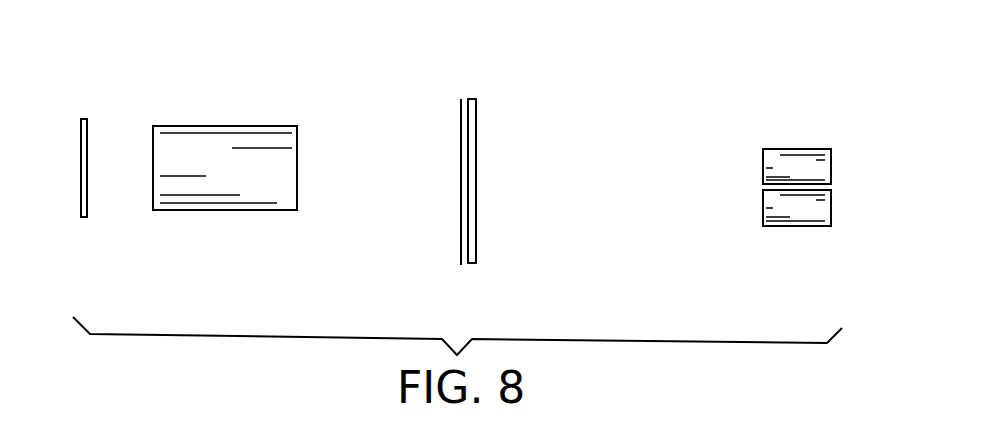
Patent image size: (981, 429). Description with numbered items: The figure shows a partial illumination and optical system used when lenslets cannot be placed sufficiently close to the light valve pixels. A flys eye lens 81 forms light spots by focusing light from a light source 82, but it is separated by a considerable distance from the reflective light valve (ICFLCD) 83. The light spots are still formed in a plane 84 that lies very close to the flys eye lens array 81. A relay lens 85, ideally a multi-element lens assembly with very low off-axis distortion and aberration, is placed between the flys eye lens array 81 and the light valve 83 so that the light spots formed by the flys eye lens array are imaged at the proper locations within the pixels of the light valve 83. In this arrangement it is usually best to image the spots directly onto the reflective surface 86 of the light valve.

The flys eye lens 81 is at (472, 100).
The light source 82 is at (793, 163).
The reflective light valve 83 is at (83, 118).
The plane 84 is at (461, 265).
The relay lens 85 is at (223, 127).
The reflective surface 86 is at (83, 218).